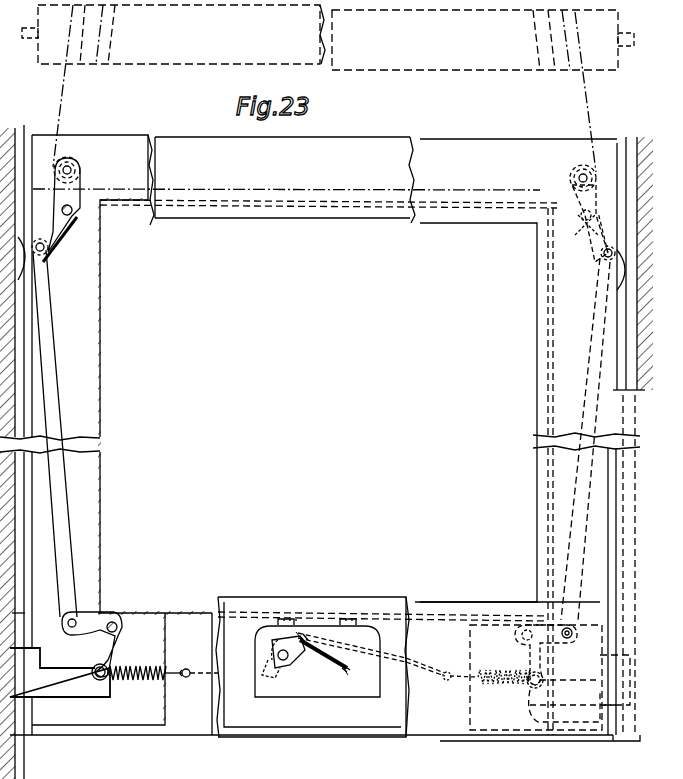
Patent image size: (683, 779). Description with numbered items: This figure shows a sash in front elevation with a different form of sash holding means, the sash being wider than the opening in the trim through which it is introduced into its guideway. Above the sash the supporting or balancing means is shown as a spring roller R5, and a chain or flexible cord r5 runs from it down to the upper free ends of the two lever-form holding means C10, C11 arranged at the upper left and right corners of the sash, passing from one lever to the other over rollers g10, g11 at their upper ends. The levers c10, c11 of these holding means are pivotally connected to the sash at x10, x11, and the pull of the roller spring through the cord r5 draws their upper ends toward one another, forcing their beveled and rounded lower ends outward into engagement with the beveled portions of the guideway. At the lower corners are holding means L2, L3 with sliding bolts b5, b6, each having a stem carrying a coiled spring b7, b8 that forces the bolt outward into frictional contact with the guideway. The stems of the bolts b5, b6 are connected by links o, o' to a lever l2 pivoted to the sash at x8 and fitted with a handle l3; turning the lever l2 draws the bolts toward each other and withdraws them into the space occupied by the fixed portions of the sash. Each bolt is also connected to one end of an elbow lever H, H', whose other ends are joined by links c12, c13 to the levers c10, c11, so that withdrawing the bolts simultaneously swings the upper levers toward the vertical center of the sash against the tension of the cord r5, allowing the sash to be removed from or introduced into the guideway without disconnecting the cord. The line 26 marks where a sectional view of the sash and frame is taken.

The spring roller R5 is at (288, 40).
The chain or flexible cord r5 is at (598, 106).
The pulley g10 is at (78, 170).
The holding means C10 is at (45, 283).
The pivot x10 is at (71, 216).
The lever c10 is at (46, 228).
The link c12 is at (52, 372).
The pulley g11 is at (574, 176).
The holding means C11 is at (602, 254).
The pivot x11 is at (578, 212).
The lever c11 is at (604, 226).
The link c13 is at (594, 366).
The holding means L2 is at (92, 670).
The sliding bolt b5 is at (80, 686).
The elbow lever H is at (100, 646).
The coiled spring b7 is at (128, 680).
The link o is at (199, 663).
The pivot x8 is at (276, 652).
The pivoted lever l2 is at (292, 665).
The handle l3 is at (348, 668).
The link o' is at (387, 656).
The elbow lever H' is at (531, 656).
The coiled spring b8 is at (507, 684).
The sliding bolt b6 is at (598, 696).
The holding means L3 is at (587, 704).
The section line 26 is at (592, 628).